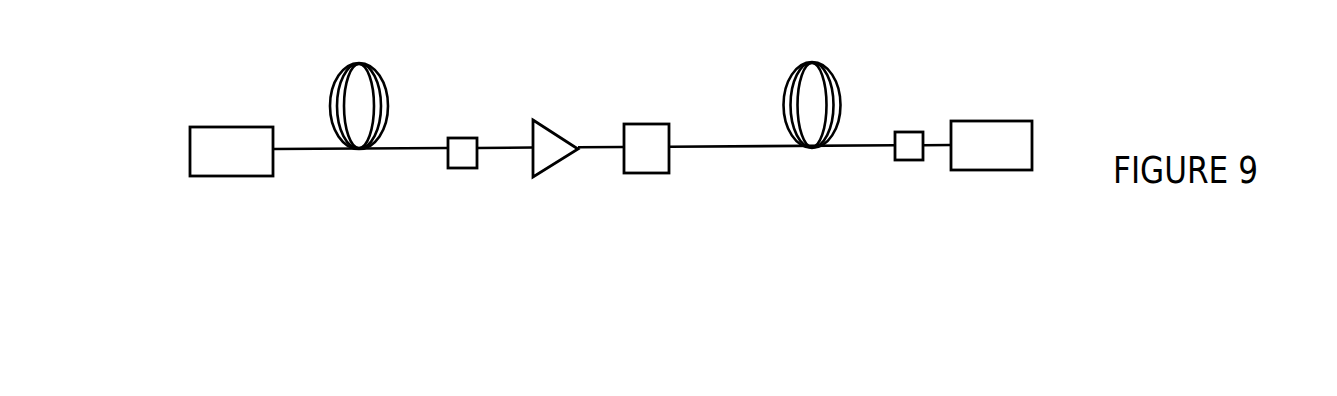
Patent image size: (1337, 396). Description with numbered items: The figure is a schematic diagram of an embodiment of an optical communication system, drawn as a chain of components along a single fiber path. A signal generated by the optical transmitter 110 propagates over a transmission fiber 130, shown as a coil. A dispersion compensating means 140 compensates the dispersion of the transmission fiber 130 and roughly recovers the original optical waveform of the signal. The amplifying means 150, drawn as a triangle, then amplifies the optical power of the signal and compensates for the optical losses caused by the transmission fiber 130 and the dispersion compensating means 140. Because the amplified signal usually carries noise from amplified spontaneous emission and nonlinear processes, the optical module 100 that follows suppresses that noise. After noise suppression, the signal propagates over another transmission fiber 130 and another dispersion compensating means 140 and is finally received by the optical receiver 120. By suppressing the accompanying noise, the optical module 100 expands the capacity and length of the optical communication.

The optical module 100 is at (646, 132).
The optical transmitter 110 is at (231, 134).
The optical receiver 120 is at (991, 129).
The transmission fiber 130 is at (585, 88).
The dispersion compensating means 140 is at (689, 133).
The amplifying means 150 is at (554, 132).